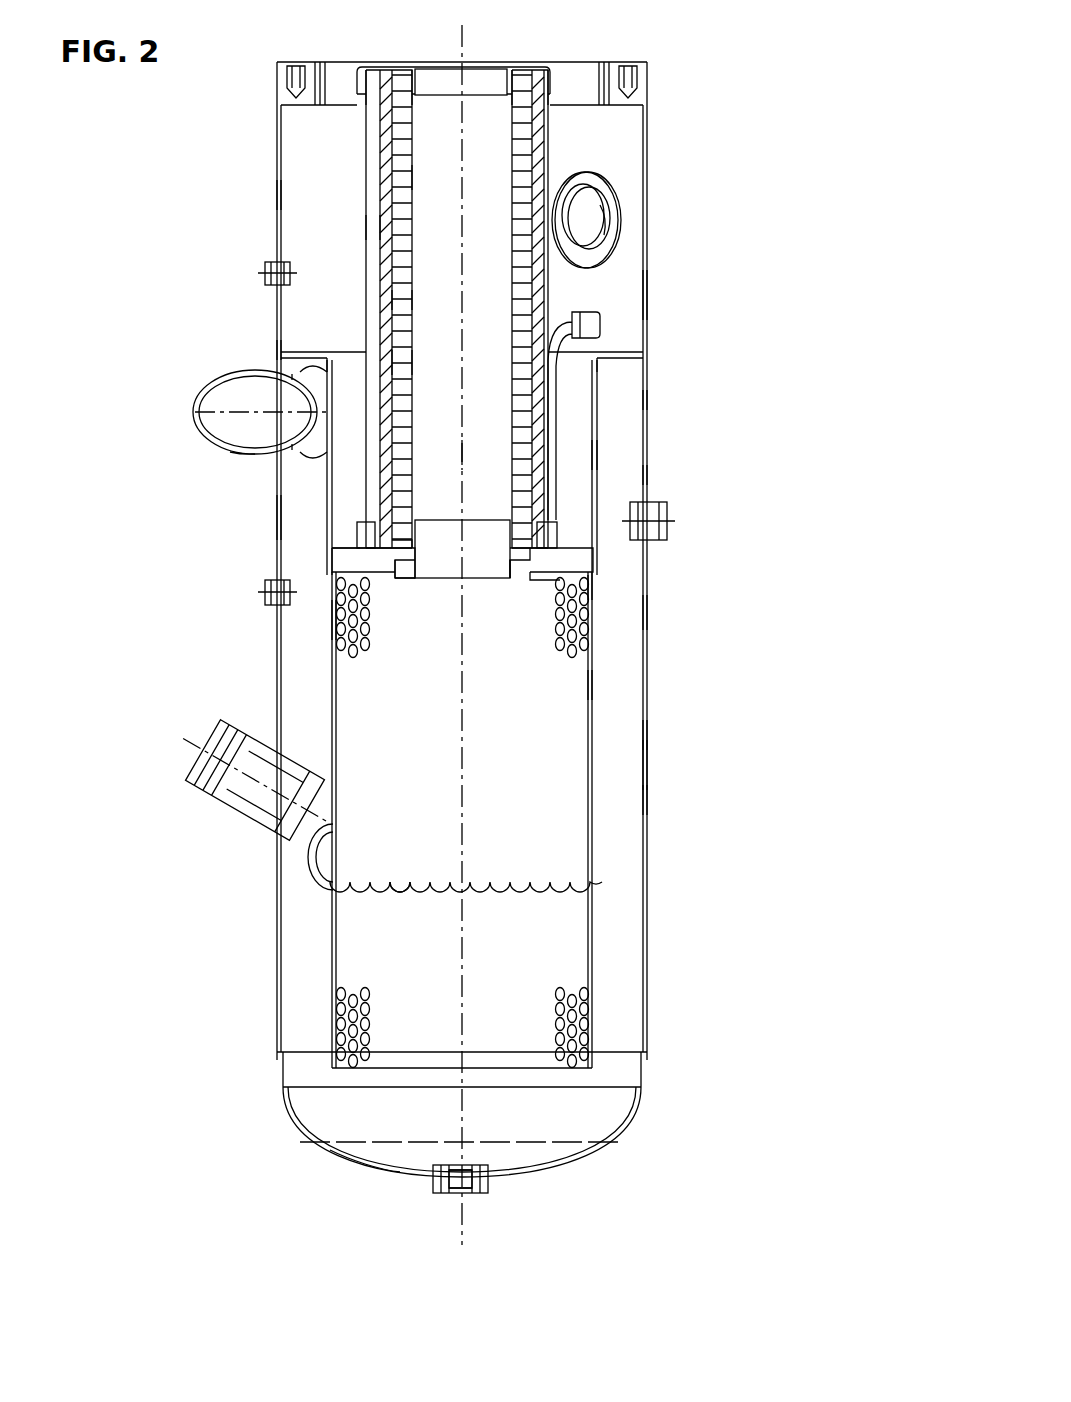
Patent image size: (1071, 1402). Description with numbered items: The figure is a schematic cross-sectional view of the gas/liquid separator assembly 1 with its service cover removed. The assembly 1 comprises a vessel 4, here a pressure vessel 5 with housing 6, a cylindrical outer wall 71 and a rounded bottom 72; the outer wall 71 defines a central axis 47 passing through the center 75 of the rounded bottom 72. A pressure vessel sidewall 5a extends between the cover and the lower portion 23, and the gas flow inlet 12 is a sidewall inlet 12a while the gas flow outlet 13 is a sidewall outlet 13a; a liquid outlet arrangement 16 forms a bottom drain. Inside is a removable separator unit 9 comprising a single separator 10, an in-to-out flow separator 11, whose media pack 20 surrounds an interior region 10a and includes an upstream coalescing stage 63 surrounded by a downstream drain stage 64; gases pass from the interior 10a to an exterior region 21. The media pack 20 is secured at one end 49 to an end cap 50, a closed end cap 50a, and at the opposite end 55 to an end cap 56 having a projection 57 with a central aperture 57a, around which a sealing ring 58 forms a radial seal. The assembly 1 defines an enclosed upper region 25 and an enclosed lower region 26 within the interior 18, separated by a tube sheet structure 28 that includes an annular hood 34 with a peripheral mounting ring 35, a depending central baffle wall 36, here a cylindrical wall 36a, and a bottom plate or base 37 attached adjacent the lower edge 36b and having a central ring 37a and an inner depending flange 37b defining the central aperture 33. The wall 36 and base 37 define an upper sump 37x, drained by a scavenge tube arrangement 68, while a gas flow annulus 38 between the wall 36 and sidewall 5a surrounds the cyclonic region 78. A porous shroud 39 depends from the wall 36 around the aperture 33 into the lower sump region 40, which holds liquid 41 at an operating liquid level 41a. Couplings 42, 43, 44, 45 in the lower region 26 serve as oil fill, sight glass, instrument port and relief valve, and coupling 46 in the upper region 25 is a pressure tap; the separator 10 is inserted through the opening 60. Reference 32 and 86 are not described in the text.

The gas/liquid separator assembly 1 is at (712, 410).
The vessel 4 is at (647, 930).
The pressure vessel 5 is at (648, 770).
The pressure vessel sidewall 5a is at (278, 515).
The housing 6 is at (648, 296).
The separator unit 9 is at (538, 142).
The separator 10 is at (534, 292).
The interior region of separator 10a is at (414, 322).
The in-to-out flow separator 11 is at (392, 150).
The gas flow inlet 12 is at (242, 400).
The sidewall inlet 12a is at (232, 452).
The gas flow outlet 13 is at (590, 208).
The sidewall outlet 13a is at (604, 240).
The liquid outlet arrangement 16 is at (490, 1180).
The interior 18 is at (660, 740).
The media pack 20 is at (416, 180).
The exterior region 21 is at (282, 196).
The lower portion 23 is at (556, 1160).
The enclosed upper region 25 is at (288, 140).
The enclosed lower region 26 is at (655, 800).
The tube sheet structure 28 is at (597, 396).
The filter top edge 32 is at (592, 595).
The central aperture 33 is at (416, 582).
The annular cover or hood 34 is at (620, 372).
The peripheral mounting ring 35 is at (280, 350).
The central baffle wall 36 is at (597, 436).
The cylindrical wall 36a is at (597, 456).
The lower edge of wall 36b is at (330, 624).
The bottom plate or base 37 is at (585, 548).
The central ring or wall 37a is at (545, 575).
The inner depending flange 37b is at (516, 574).
The upper sump 37x is at (330, 548).
The gas flow annulus 38 is at (660, 480).
The porous shroud 39 is at (592, 688).
The lower sump region 40 is at (325, 1125).
The liquid 41 is at (506, 880).
The operating liquid level 41a is at (398, 880).
The coupling 42 is at (228, 812).
The coupling 43 is at (330, 862).
The coupling 44 is at (266, 590).
The coupling 45 is at (655, 540).
The coupling 46 is at (272, 262).
The central axis 47 is at (466, 465).
The end of media pack 49 is at (406, 82).
The end cap 50 is at (432, 70).
The closed end cap 50a is at (480, 76).
The end of separator 55 is at (405, 530).
The end cap 56 is at (362, 524).
The projection 57 is at (412, 558).
The central aperture 57a is at (490, 524).
The sealing ring 58 is at (398, 576).
The opening 60 is at (590, 64).
The coalescing stage 63 is at (412, 364).
The drain stage 64 is at (382, 224).
The scavenge tube arrangement 68 is at (554, 360).
The cylindrical outer wall 71 is at (648, 612).
The rounded bottom 72 is at (380, 1170).
The center of rounded bottom 75 is at (455, 1190).
The region 78 is at (660, 404).
The flow direction 86 is at (300, 478).